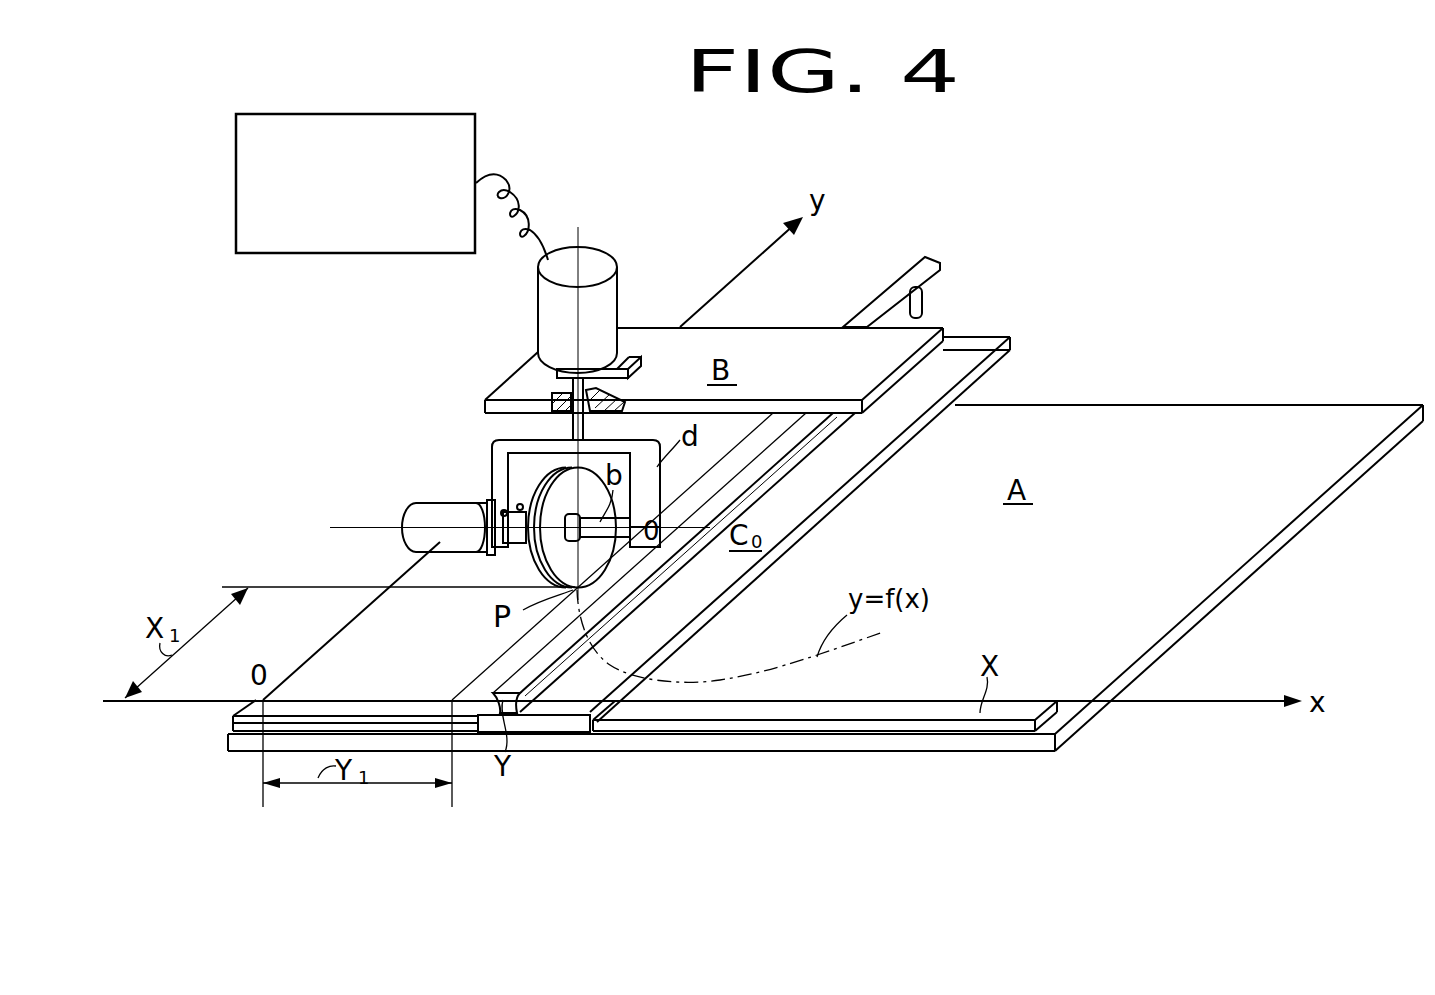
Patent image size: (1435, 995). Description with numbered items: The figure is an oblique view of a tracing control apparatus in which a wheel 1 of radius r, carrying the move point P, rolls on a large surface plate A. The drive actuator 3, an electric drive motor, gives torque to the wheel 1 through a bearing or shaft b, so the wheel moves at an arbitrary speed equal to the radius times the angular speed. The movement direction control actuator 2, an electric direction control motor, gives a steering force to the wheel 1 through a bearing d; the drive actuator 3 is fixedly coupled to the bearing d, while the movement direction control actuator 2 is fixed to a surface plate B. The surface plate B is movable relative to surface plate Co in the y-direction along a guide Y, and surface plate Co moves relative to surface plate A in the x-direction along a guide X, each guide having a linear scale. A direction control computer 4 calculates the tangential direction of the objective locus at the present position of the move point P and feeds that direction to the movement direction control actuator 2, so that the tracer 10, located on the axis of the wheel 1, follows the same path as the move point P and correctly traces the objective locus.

The wheel 1 is at (555, 543).
The movement direction control actuator 2 is at (598, 262).
The drive actuator 3 is at (433, 512).
The direction control computer 4 is at (236, 181).
The tracer 10 is at (922, 300).